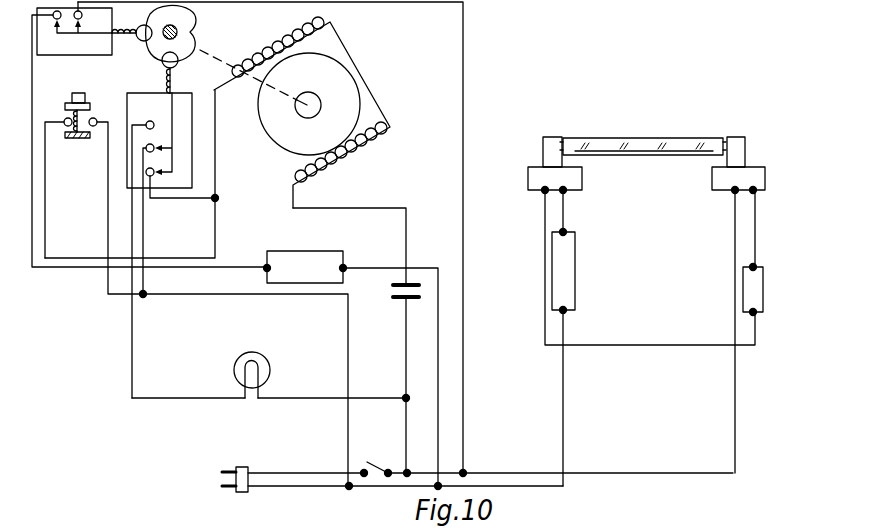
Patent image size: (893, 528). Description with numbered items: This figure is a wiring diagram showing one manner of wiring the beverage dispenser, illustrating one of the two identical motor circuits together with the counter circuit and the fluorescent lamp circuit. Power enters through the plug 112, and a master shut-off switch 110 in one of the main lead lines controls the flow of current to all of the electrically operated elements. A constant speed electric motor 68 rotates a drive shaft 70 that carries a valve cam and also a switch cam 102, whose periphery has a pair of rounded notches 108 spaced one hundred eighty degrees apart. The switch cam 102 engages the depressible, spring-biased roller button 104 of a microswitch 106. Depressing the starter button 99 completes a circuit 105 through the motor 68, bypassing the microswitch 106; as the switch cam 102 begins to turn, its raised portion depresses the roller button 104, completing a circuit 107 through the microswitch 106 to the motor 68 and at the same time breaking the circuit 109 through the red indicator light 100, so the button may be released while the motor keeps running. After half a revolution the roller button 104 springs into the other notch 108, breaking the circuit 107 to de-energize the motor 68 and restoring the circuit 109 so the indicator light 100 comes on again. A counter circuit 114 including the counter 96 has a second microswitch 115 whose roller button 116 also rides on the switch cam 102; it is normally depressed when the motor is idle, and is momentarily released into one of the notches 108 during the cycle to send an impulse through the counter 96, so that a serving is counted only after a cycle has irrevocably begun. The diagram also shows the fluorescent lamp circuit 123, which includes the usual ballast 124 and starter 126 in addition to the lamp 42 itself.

The fluorescent lamp 42 is at (645, 138).
The electric motor 68 is at (344, 77).
The drive shaft 70 is at (174, 42).
The counter 96 is at (314, 251).
The starter button 99 is at (73, 94).
The indicator light 100 is at (267, 337).
The switch cam 102 is at (195, 17).
The roller button 104 is at (162, 61).
The circuit 105 is at (47, 219).
The microswitch 106 is at (192, 141).
The circuit 107 is at (198, 203).
The notches 108 is at (178, 34).
The circuit 109 is at (133, 365).
The master shut-off switch 110 is at (390, 447).
The plug 112 is at (242, 467).
The counter circuit 114 is at (92, 268).
The second microswitch 115 is at (77, 56).
The roller button 116 is at (143, 24).
The fluorescent lamp circuit 123 is at (563, 408).
The ballast 124 is at (576, 262).
The starter 126 is at (743, 285).